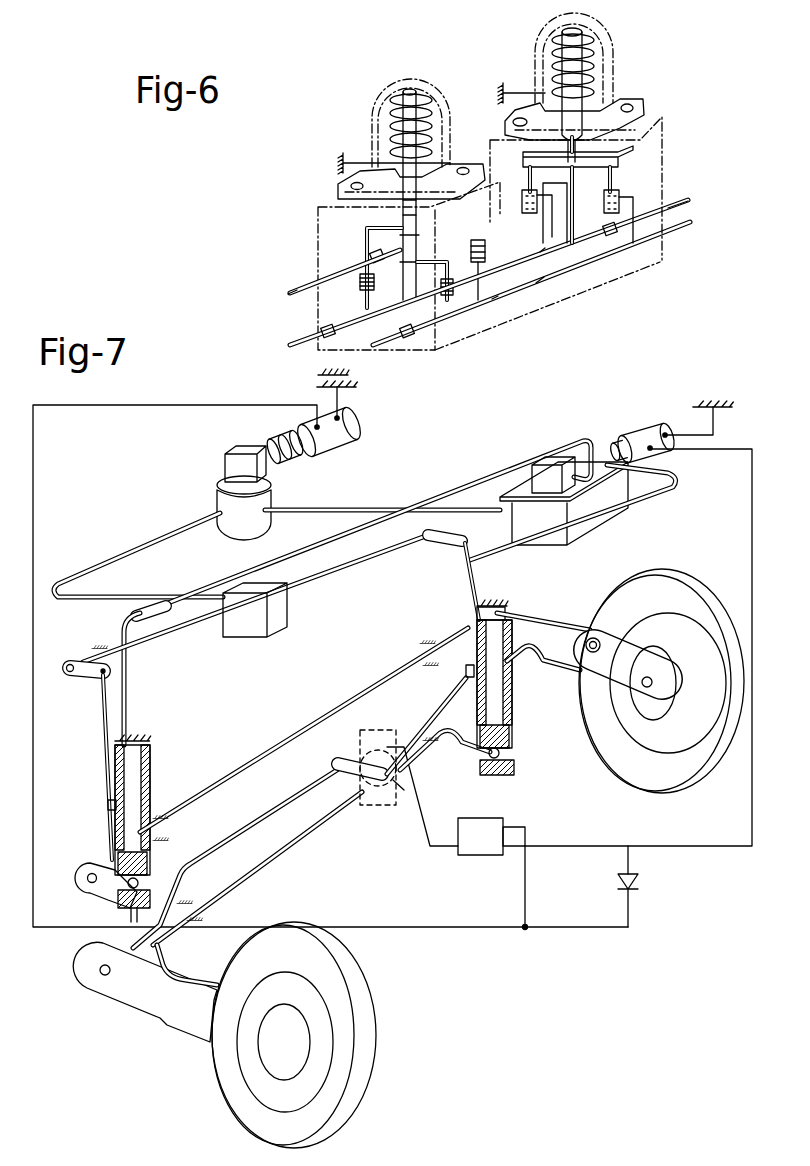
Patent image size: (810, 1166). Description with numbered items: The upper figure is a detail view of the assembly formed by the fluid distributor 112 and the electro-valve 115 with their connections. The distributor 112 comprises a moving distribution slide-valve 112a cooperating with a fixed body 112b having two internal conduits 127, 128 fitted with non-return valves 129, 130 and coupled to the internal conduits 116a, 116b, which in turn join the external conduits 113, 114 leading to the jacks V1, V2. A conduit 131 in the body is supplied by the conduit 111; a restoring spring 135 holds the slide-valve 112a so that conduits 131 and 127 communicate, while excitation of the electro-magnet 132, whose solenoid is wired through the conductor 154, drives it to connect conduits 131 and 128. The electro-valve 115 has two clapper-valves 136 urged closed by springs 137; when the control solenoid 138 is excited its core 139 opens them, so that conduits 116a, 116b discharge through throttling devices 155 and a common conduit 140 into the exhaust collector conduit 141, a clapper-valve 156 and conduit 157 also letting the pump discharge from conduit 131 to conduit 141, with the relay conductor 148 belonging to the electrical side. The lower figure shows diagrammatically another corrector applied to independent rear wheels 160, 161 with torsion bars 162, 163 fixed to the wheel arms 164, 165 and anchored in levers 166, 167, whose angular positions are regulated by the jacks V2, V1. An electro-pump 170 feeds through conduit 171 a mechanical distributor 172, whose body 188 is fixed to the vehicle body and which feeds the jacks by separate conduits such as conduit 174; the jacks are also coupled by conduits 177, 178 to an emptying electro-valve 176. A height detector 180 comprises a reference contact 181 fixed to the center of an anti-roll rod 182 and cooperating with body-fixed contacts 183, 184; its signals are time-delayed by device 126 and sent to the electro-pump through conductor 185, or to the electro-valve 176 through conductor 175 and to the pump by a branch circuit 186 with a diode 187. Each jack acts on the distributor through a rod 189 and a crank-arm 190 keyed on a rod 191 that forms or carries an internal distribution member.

In FIG. 6, the conduit 111 is at (295, 292).
In FIG. 6, the distributor 112 is at (333, 183).
In FIG. 6, the distribution slide-valve 112a is at (463, 335).
In FIG. 6, the fixed body 112b is at (320, 258).
In FIG. 6, the external conduit 113 is at (293, 333).
In FIG. 6, the external conduit 114 is at (393, 341).
In FIG. 6, the electro-valve 115 is at (616, 88).
In FIG. 6, the internal conduit 116a is at (387, 310).
In FIG. 6, the internal conduit 116b is at (540, 280).
In FIG. 6, the internal conduit 127 is at (335, 255).
In FIG. 6, the internal conduit 128 is at (471, 250).
In FIG. 6, the non-return valve 129 is at (360, 285).
In FIG. 6, the non-return valve 130 is at (490, 300).
In FIG. 6, the conduit 131 is at (378, 252).
In FIG. 6, the electro-magnet 132 is at (425, 92).
In FIG. 6, the restoring spring 135 is at (447, 296).
In FIG. 6, the clapper-valve 136 is at (613, 178).
In FIG. 6, the spring 137 is at (613, 215).
In FIG. 6, the control solenoid 138 is at (598, 24).
In FIG. 6, the core 139 is at (598, 63).
In FIG. 6, the common conduit 140 is at (568, 205).
In FIG. 6, the exhaust collector conduit 141 is at (673, 210).
In FIG. 6, the conductor 148 is at (560, 33).
In FIG. 6, the conductor 154 is at (373, 100).
In FIG. 6, the throttling device 155 is at (623, 203).
In FIG. 6, the clapper-valve 156 is at (490, 233).
In FIG. 6, the conduit 157 is at (537, 253).
In FIG. 7, the time-delay device 126 is at (490, 823).
In FIG. 7, the wheel 160 is at (352, 978).
In FIG. 7, the wheel 161 is at (710, 590).
In FIG. 7, the torsion bar 162 is at (302, 834).
In FIG. 7, the torsion bar 163 is at (280, 750).
In FIG. 7, the wheel arm 164 is at (128, 987).
In FIG. 7, the wheel arm 165 is at (585, 622).
In FIG. 7, the lever 166 is at (455, 755).
In FIG. 7, the lever 167 is at (86, 891).
In FIG. 7, the electro-pump 170 is at (261, 442).
In FIG. 7, the conduit 171 is at (120, 553).
In FIG. 7, the distributor 172 is at (246, 642).
In FIG. 7, the conduit 174 is at (127, 710).
In FIG. 7, the conductor 175 is at (695, 846).
In FIG. 7, the emptying electro-valve 176 is at (608, 432).
In FIG. 7, the conduit 177 is at (650, 495).
In FIG. 7, the conduit 178 is at (437, 493).
In FIG. 7, the height detector 180 is at (368, 815).
In FIG. 7, the reference contact 181 is at (352, 762).
In FIG. 7, the anti-roll rod 182 is at (215, 848).
In FIG. 7, the contact 183 is at (382, 747).
In FIG. 7, the contact 184 is at (378, 792).
In FIG. 7, the conductor 185 is at (507, 897).
In FIG. 7, the branch circuit 186 is at (628, 866).
In FIG. 7, the diode 187 is at (636, 888).
In FIG. 7, the distributor body 188 is at (273, 583).
In FIG. 7, the rod 189 is at (463, 590).
In FIG. 7, the crank-arm 190 is at (452, 525).
In FIG. 7, the rod 191 is at (372, 553).
In FIG. 7, the jack V1 is at (113, 837).
In FIG. 7, the jack V2 is at (512, 723).